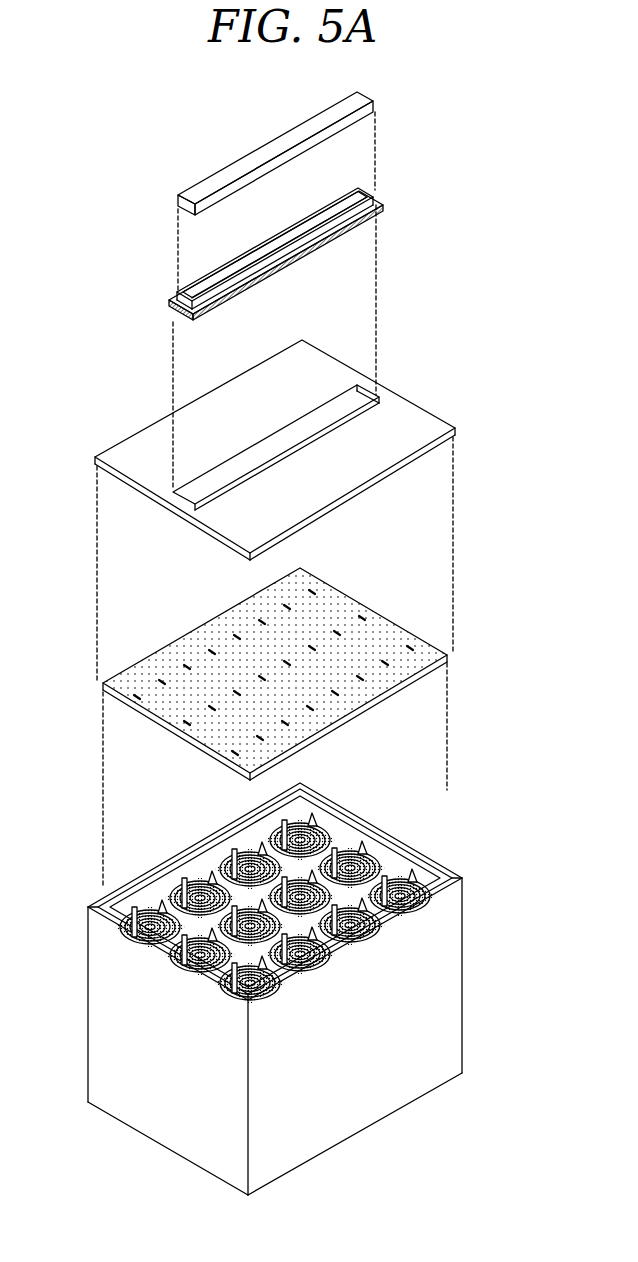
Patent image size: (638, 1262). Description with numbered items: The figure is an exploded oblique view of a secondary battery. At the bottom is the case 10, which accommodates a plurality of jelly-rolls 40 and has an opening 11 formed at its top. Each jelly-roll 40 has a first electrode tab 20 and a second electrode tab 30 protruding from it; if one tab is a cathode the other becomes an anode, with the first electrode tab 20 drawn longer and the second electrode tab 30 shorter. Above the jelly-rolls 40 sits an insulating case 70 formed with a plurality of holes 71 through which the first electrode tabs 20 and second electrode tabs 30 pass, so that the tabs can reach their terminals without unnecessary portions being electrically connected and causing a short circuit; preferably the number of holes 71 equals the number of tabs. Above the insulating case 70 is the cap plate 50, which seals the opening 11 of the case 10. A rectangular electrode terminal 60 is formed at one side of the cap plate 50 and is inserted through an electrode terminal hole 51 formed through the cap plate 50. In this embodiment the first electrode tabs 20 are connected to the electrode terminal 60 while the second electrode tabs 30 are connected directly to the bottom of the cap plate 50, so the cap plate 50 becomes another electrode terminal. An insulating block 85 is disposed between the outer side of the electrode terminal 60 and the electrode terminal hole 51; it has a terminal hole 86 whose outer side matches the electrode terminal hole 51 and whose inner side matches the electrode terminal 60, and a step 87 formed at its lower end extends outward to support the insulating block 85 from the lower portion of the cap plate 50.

The case 10 is at (298, 979).
The opening 11 is at (340, 837).
The first electrode tab 20 is at (183, 866).
The second electrode tab 30 is at (423, 875).
The jelly-roll 40 is at (387, 876).
The cap plate 50 is at (289, 445).
The electrode terminal hole 51 is at (333, 415).
The electrode terminal 60 is at (212, 152).
The insulating case 70 is at (274, 670).
The holes 71 is at (185, 717).
The insulating block 85 is at (249, 266).
The terminal hole 86 is at (315, 232).
The step 87 is at (270, 282).